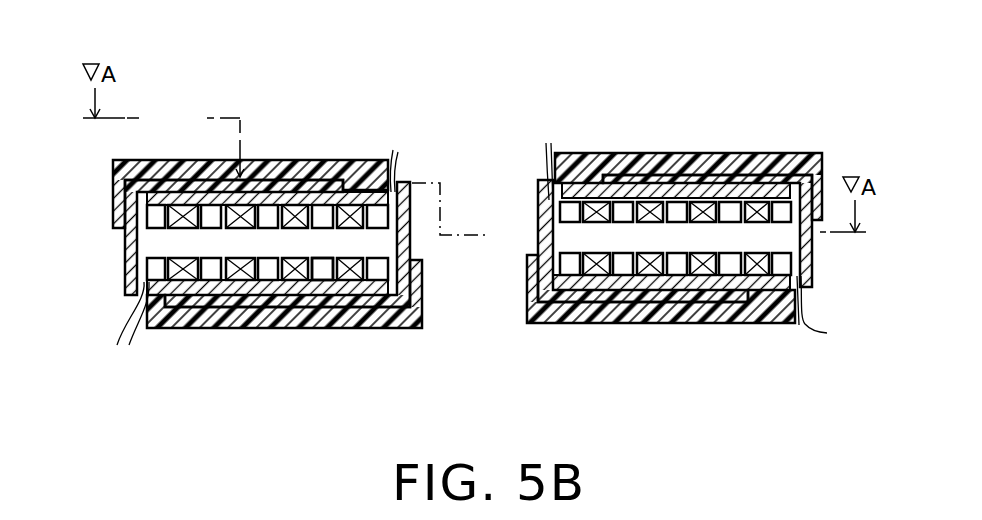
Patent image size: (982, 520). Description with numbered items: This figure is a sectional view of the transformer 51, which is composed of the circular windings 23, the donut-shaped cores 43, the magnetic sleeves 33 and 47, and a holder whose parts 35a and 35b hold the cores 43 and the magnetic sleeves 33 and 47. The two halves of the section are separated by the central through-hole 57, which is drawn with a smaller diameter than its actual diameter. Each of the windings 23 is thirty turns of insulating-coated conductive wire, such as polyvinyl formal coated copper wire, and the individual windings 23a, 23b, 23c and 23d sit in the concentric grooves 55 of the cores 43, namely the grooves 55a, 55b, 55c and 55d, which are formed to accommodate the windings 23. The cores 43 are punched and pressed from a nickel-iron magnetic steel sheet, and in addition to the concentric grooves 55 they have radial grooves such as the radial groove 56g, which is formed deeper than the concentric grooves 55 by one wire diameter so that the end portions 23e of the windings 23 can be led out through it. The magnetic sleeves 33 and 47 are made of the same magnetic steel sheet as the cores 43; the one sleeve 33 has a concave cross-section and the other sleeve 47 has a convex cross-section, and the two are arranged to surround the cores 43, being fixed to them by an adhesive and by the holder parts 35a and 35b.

The circular windings 23 is at (350, 205).
The winding 23a is at (598, 277).
The winding 23b is at (650, 277).
The winding 23c is at (703, 277).
The winding 23d is at (757, 277).
The end portions of the windings 23e is at (397, 150).
The magnetic sleeve 33 is at (263, 180).
The holder part 35a is at (145, 172).
The holder part 35b is at (384, 315).
The donut-shaped core 43 is at (302, 193).
The magnetic sleeve 47 is at (412, 182).
The transformer 51 is at (527, 100).
The concentric grooves 55 is at (696, 135).
The concentric groove 55a is at (597, 202).
The concentric groove 55b is at (650, 202).
The concentric groove 55c is at (704, 202).
The concentric groove 55d is at (775, 154).
The radial groove 56g is at (323, 275).
The central through-hole 57 is at (487, 157).